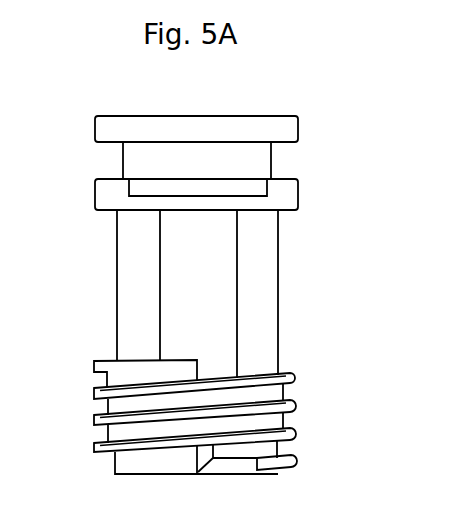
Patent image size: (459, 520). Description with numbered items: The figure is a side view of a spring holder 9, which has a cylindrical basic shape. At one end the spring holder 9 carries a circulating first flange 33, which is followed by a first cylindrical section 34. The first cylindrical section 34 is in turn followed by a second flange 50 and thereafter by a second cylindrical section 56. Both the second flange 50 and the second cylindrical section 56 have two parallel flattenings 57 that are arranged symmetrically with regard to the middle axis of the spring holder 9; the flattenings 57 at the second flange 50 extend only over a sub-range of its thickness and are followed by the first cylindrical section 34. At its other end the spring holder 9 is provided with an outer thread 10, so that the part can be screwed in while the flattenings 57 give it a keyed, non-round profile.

The first flange 33 is at (279, 129).
The first cylindrical section 34 is at (258, 157).
The second flange 50 is at (280, 194).
The second cylindrical section 56 is at (133, 277).
The flattenings 57 is at (199, 184).
The spring holder 9 is at (285, 321).
The outer thread 10 is at (247, 395).